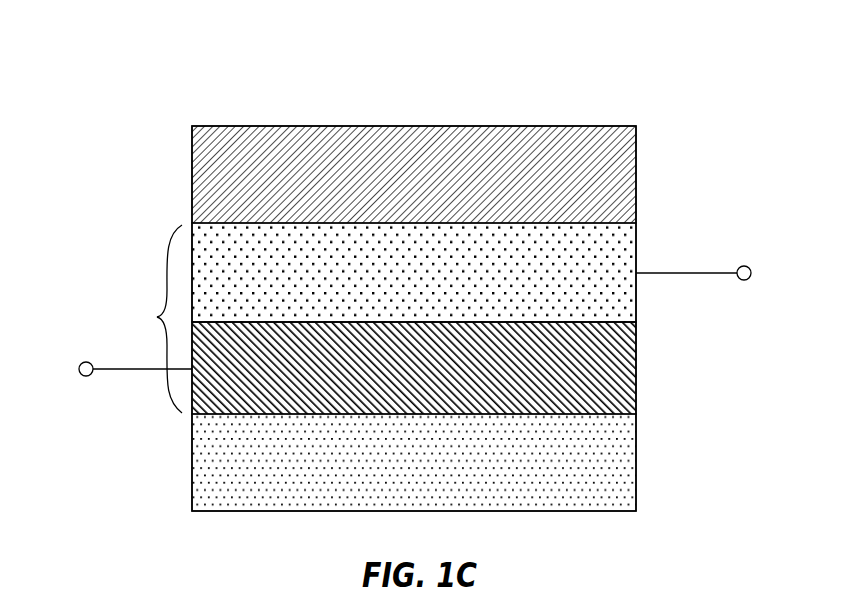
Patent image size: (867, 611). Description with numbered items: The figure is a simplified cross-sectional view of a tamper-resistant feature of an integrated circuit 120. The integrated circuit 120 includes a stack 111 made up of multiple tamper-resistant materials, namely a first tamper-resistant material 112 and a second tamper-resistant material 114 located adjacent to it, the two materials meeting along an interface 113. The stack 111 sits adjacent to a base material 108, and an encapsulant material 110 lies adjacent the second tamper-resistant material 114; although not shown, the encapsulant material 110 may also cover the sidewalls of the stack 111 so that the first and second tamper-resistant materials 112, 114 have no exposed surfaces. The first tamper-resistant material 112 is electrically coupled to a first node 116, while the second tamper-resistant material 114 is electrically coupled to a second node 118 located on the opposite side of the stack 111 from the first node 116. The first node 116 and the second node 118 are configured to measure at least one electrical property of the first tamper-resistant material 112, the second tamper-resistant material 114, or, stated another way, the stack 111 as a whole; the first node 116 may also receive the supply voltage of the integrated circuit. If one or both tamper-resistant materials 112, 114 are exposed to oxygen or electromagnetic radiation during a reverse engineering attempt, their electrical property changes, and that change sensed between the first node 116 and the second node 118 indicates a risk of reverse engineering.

The integrated circuit 120 is at (150, 98).
The encapsulant material 110 is at (598, 160).
The second tamper-resistant material 114 is at (612, 252).
The first tamper-resistant material 112 is at (620, 384).
The base material 108 is at (620, 465).
The stack 111 is at (149, 319).
The interface 113 is at (213, 320).
The first node 116 is at (84, 376).
The second node 118 is at (745, 280).